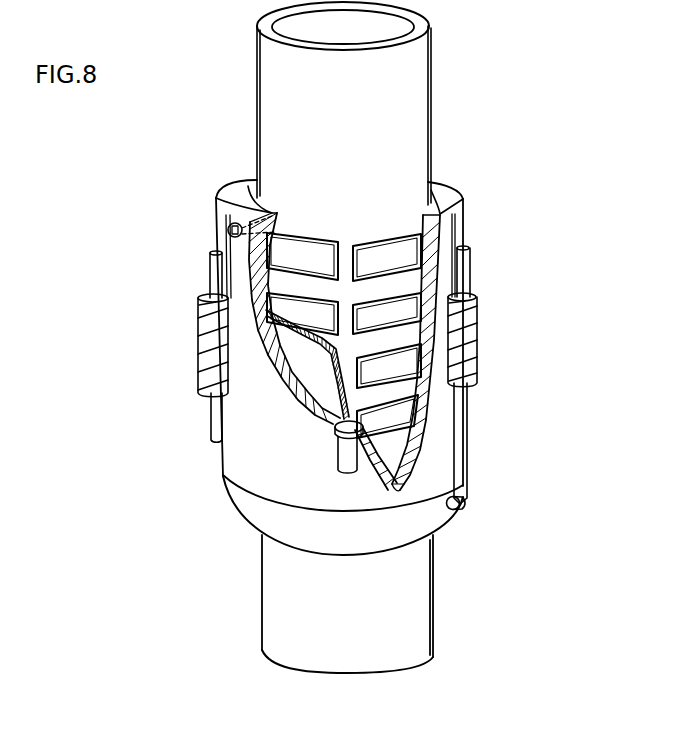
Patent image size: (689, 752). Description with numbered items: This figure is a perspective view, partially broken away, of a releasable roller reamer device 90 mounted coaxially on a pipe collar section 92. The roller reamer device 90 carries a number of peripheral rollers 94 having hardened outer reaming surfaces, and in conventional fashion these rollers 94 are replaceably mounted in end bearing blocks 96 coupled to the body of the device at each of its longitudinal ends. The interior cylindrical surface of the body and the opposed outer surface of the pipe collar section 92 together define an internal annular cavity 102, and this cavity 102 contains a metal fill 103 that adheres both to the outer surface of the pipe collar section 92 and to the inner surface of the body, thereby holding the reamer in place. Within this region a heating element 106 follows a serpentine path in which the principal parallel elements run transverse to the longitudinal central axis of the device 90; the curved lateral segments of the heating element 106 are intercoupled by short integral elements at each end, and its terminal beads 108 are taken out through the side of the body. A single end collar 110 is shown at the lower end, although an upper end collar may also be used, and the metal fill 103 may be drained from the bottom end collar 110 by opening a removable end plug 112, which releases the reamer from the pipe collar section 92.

The roller reamer device 90 is at (490, 202).
The pipe collar section 92 is at (407, 78).
The peripheral rollers 94 is at (200, 365).
The end bearing blocks 96 is at (465, 268).
The internal annular cavity 102 is at (412, 196).
The metal fill 103 is at (306, 362).
The heating element 106 is at (383, 388).
The terminal beads 108 is at (228, 232).
The end collar 110 is at (432, 522).
The removable end plug 112 is at (463, 502).